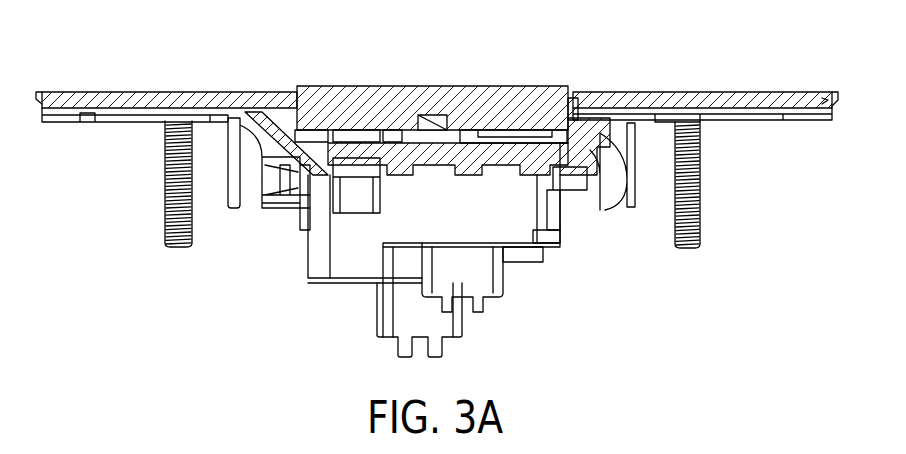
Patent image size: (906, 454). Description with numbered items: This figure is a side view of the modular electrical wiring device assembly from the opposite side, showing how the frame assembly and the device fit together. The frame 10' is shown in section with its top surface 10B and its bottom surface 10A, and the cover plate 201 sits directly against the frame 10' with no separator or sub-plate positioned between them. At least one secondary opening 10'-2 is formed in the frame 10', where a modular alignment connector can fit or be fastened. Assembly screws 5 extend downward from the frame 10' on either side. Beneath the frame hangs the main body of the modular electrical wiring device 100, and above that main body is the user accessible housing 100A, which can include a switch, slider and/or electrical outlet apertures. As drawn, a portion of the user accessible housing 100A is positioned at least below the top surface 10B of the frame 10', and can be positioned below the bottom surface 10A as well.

The top surface 10B is at (88, 94).
The cover plate 201 is at (205, 98).
The user accessible housing 100A is at (393, 105).
The secondary opening 10'-2 is at (588, 106).
The frame 10' is at (705, 77).
The bottom surface 10A is at (753, 125).
The assembly screws 5 is at (165, 217).
The modular electrical wiring device 100 is at (335, 243).